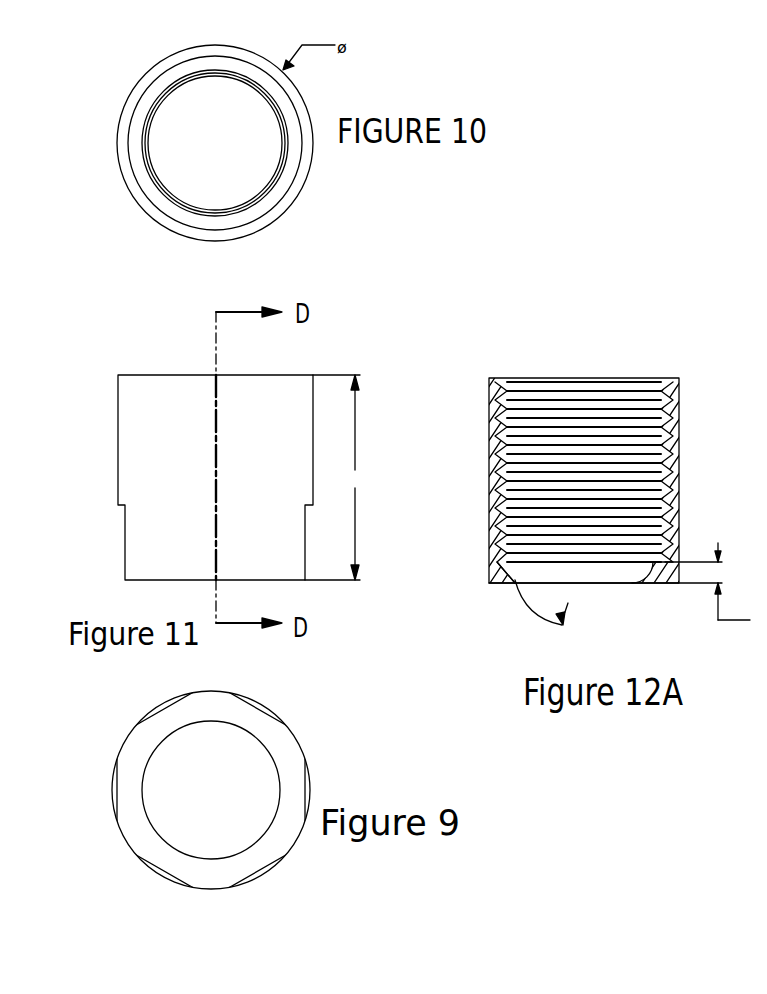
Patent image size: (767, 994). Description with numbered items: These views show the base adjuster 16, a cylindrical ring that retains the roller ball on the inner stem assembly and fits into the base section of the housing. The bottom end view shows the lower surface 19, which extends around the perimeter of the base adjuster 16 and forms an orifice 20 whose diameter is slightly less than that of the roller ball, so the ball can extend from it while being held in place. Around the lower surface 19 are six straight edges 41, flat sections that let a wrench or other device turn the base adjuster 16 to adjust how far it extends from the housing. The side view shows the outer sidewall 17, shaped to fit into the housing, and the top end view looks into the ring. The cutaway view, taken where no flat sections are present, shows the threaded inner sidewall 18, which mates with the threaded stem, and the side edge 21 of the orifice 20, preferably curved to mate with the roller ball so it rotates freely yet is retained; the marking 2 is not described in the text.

In FIG. 11, the base adjuster 16 is at (118, 415).
In FIG. 12A, the base adjuster 16 is at (489, 427).
In FIG. 12A, the outer sidewall 17 is at (489, 495).
In FIG. 12A, the inner sidewall 18 is at (508, 378).
In FIG. 12A, the lower surface 19 is at (500, 585).
In FIG. 9, the lower surface 19 is at (137, 743).
In FIG. 9, the orifice 20 is at (211, 790).
In FIG. 12A, the side edge 21 is at (632, 583).
In FIG. 12A, the gap 2 is at (578, 568).
In FIG. 9, the straight edges 41 is at (165, 868).